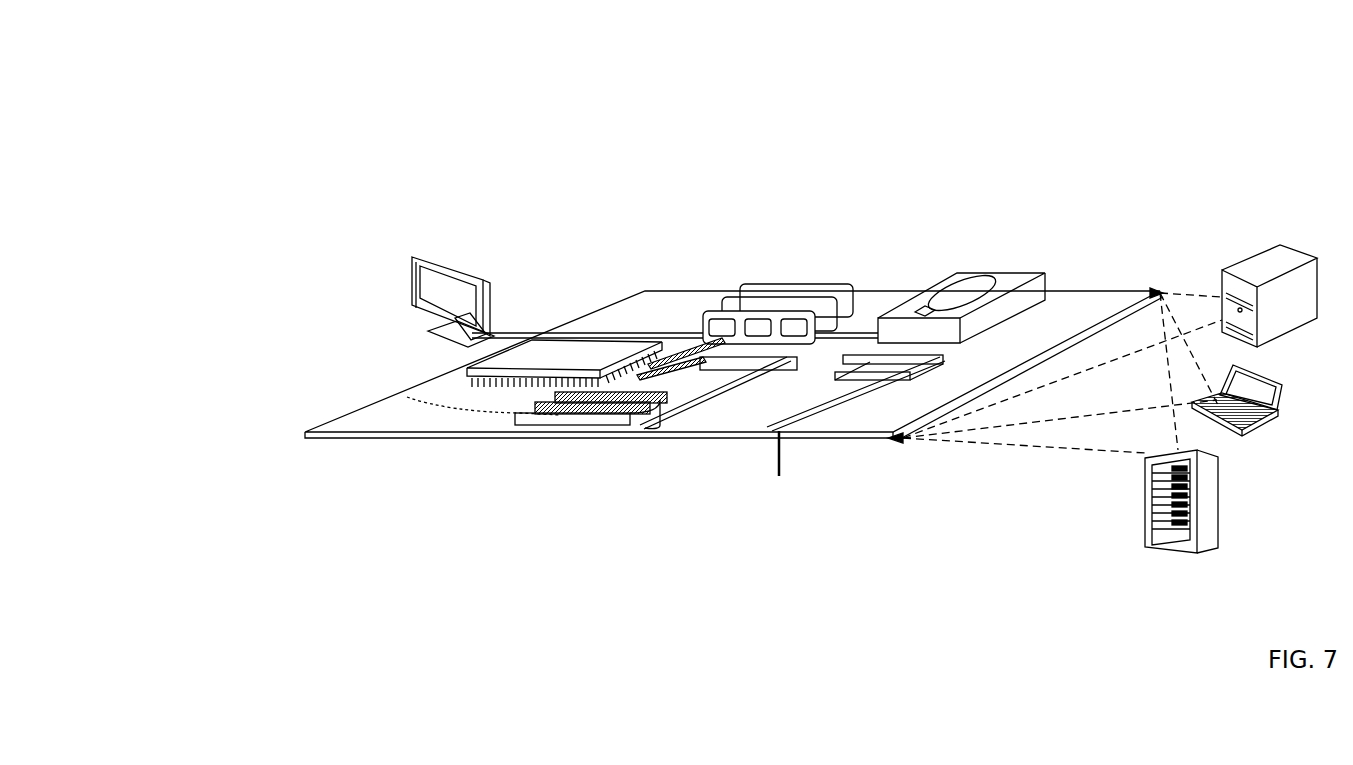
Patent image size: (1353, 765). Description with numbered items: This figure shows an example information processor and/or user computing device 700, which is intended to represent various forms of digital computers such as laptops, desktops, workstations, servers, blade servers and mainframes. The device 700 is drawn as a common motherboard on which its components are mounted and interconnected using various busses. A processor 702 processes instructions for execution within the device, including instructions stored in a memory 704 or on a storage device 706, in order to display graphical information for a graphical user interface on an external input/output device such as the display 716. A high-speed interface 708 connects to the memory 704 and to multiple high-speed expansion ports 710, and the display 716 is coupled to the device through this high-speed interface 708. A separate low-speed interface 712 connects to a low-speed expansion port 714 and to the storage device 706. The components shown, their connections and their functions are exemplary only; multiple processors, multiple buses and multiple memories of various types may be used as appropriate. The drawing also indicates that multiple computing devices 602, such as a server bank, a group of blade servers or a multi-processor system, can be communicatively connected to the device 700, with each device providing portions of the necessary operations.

The information processor and/or user computing device 700 is at (186, 179).
The processor 702 is at (433, 374).
The memory 704 is at (754, 287).
The storage device 706 is at (948, 277).
The high-speed interface 708 is at (676, 340).
The high-speed expansion ports 710 is at (412, 406).
The low-speed interface 712 is at (862, 365).
The low-speed expansion port 714 is at (800, 433).
The display 716 is at (412, 257).
The computing devices 602 is at (1222, 275).